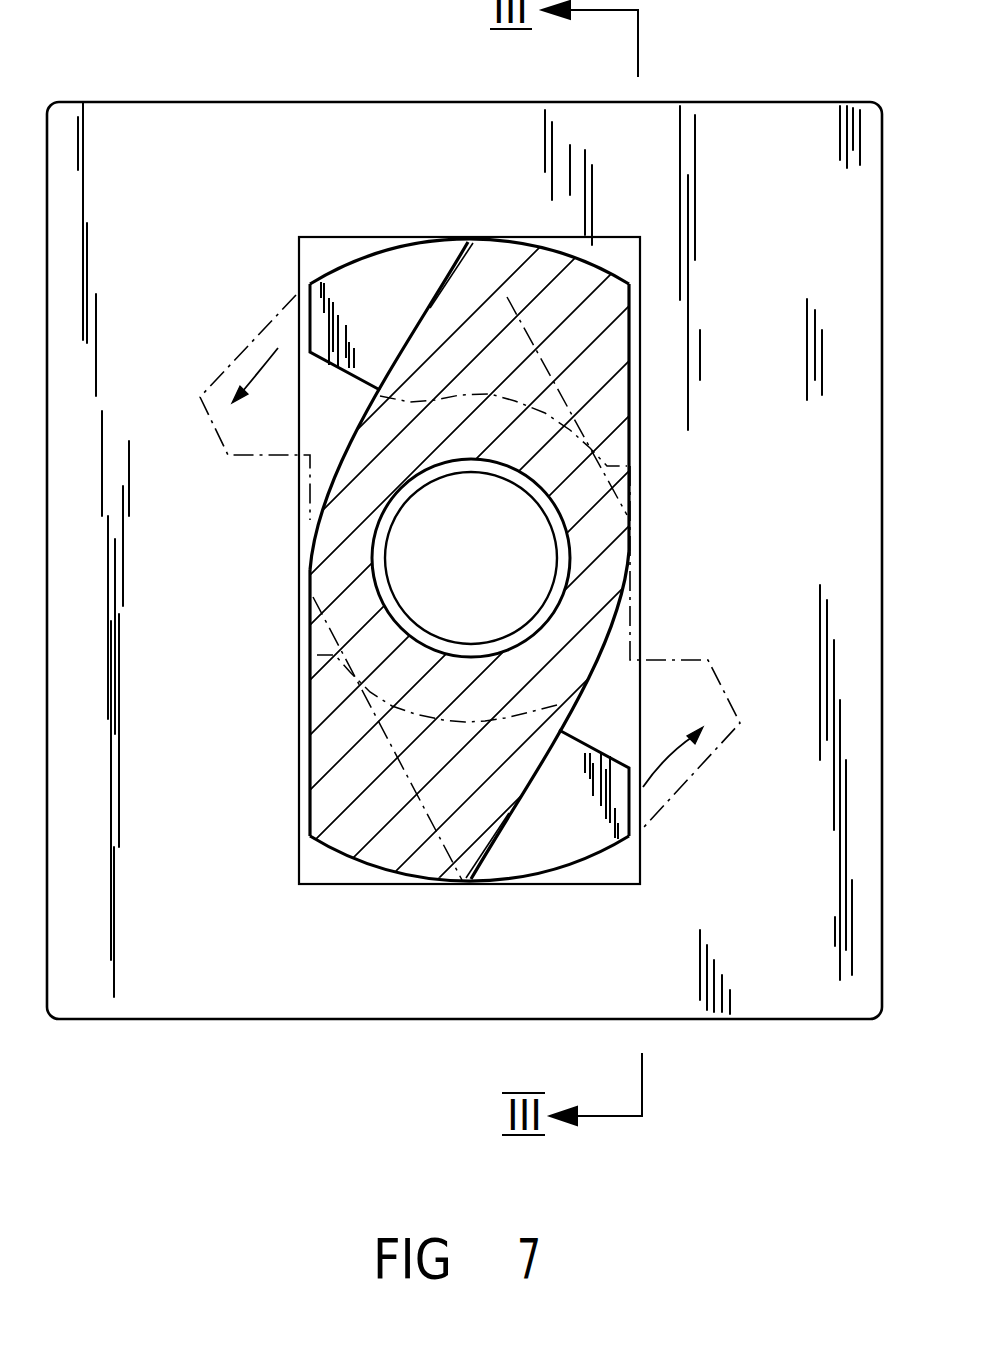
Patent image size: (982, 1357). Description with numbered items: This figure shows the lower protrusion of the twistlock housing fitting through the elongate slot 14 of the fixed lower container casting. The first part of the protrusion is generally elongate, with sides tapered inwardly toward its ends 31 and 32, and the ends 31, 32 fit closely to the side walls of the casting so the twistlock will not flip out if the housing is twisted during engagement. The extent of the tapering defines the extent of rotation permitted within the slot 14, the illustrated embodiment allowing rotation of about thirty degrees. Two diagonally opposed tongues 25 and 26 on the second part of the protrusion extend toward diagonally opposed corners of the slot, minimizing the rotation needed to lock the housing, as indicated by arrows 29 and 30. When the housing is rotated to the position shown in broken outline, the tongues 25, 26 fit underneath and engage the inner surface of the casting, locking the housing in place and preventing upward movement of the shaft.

The slot 14 is at (602, 705).
The tongue 25 is at (374, 285).
The tongue 26 is at (575, 817).
The arrow 29 is at (265, 362).
The arrow 30 is at (668, 768).
The end of protrusion 31 is at (507, 297).
The end of protrusion 32 is at (417, 877).